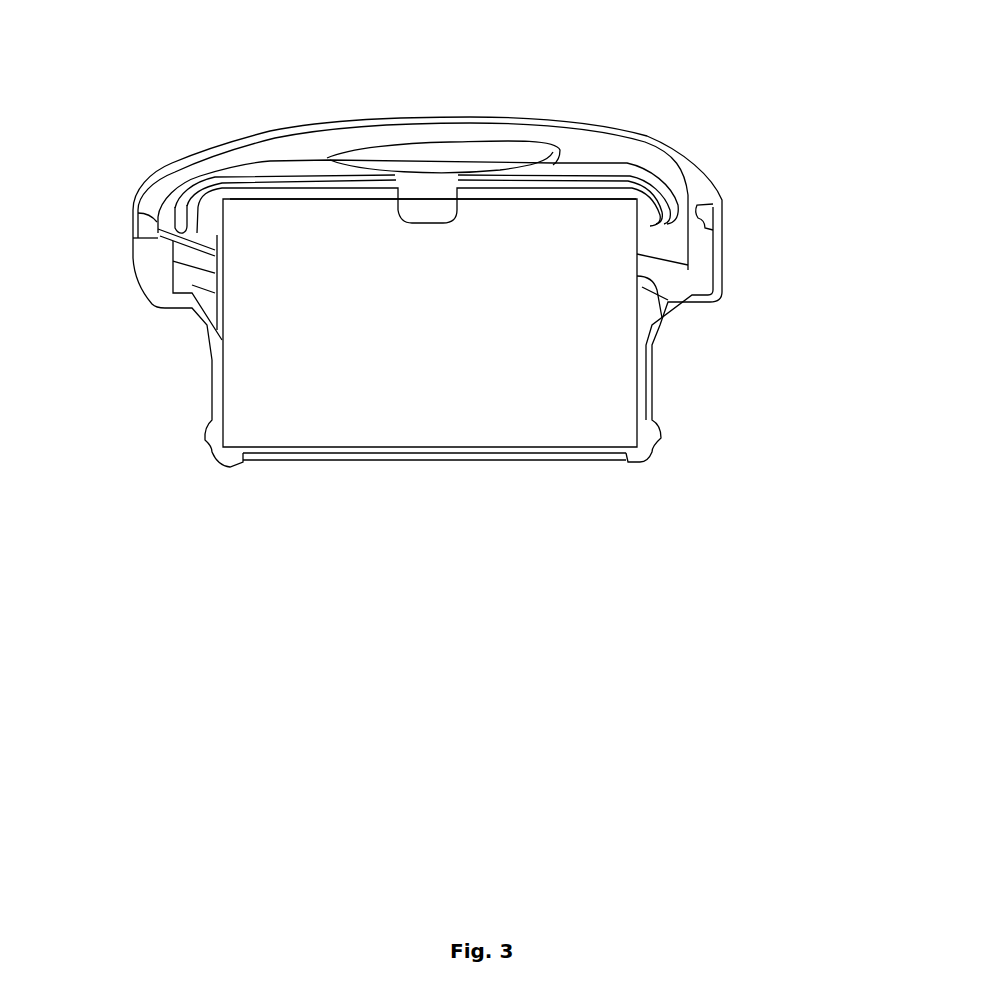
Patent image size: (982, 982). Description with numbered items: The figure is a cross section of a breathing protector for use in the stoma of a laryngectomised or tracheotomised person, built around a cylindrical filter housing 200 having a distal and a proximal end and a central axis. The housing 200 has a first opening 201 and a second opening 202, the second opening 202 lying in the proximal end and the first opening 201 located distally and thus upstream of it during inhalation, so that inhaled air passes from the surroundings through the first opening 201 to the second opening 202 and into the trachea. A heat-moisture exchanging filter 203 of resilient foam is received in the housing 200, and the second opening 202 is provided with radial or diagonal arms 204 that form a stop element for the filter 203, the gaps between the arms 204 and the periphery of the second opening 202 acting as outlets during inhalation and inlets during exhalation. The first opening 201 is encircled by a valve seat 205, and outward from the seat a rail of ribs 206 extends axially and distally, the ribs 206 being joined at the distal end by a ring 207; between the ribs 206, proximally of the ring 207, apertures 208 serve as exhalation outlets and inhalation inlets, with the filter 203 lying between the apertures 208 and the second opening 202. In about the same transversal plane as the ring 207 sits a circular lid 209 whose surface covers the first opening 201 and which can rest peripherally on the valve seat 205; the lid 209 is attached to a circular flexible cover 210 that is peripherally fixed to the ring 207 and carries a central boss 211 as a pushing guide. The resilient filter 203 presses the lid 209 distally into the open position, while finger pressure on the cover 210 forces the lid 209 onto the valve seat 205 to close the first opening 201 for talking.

The cylindrical filter housing 200 is at (658, 373).
The first opening 201 is at (648, 286).
The second opening 202 is at (423, 458).
The heat-moisture exchanging filter 203 is at (440, 323).
The radial or diagonal arms 204 is at (457, 460).
The valve seat 205 is at (192, 288).
The ribs 206 is at (158, 248).
The ring 207 is at (695, 207).
The apertures 208 is at (657, 244).
The circular lid 209 is at (285, 190).
The circular flexible cover 210 is at (510, 173).
The central boss 211 is at (330, 159).